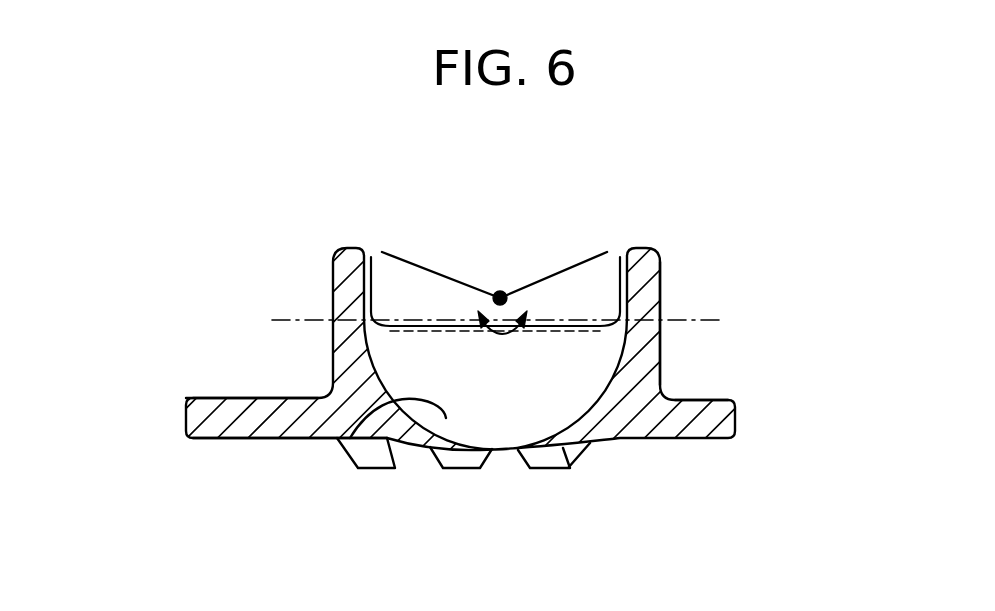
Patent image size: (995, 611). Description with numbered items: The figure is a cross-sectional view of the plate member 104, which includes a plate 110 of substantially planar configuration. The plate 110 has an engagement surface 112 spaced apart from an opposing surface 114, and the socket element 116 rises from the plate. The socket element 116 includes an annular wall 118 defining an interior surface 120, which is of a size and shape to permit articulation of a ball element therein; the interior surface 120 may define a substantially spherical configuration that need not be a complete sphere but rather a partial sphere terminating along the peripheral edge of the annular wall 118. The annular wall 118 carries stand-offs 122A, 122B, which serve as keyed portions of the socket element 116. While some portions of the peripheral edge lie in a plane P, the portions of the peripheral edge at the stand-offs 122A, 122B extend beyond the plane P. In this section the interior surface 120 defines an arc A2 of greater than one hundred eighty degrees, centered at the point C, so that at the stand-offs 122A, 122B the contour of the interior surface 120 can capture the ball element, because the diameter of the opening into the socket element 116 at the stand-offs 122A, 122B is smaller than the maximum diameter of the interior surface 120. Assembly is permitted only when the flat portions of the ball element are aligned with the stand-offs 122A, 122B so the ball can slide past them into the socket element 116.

The plate member 104 is at (528, 142).
The plate 110 is at (178, 412).
The engagement surface 112 is at (232, 440).
The opposing surface 114 is at (293, 397).
The socket element 116 is at (722, 270).
The annular wall 118 is at (662, 352).
The interior surface 120 is at (342, 443).
The stand-off 122A is at (343, 248).
The stand-off 122B is at (630, 266).
The plane P is at (303, 318).
The center point C is at (500, 292).
The arc A2 is at (502, 342).